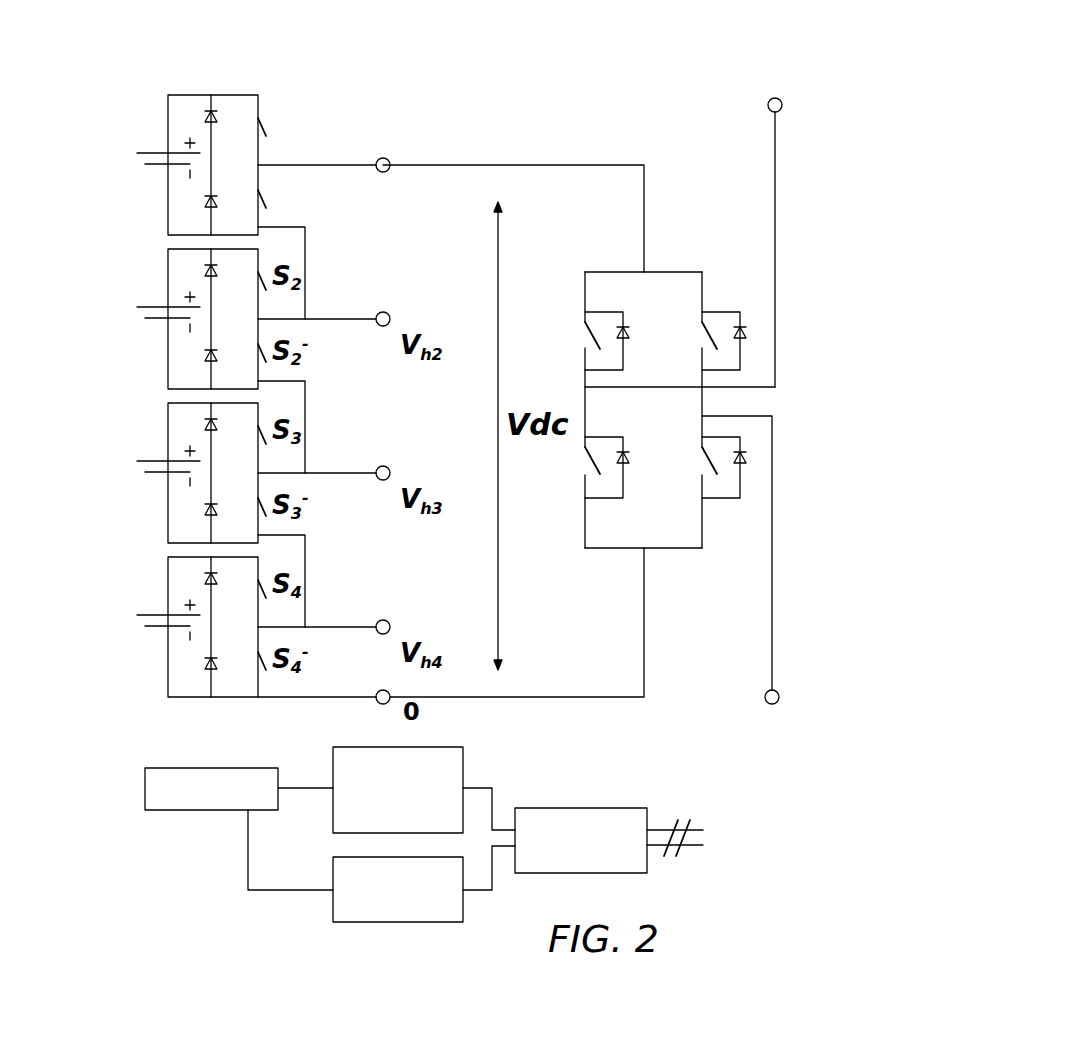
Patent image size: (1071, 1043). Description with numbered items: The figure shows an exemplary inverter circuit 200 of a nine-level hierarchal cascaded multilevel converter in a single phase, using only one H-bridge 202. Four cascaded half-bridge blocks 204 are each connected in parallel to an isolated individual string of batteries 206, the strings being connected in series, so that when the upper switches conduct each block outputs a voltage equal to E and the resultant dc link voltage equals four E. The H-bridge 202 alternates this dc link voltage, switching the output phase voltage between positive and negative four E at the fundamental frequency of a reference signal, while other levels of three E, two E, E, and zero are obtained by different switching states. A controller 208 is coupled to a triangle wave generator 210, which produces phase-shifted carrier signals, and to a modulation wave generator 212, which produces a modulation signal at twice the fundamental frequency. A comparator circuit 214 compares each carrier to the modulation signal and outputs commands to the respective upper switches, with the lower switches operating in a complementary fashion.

The inverter circuit 200 is at (588, 98).
The H-bridge 202 is at (790, 138).
The half-bridge block 204 is at (200, 72).
The string of batteries 206 is at (106, 293).
The controller 208 is at (145, 785).
The triangle wave generator 210 is at (333, 760).
The modulation wave generator 212 is at (333, 905).
The comparator circuit 214 is at (618, 808).